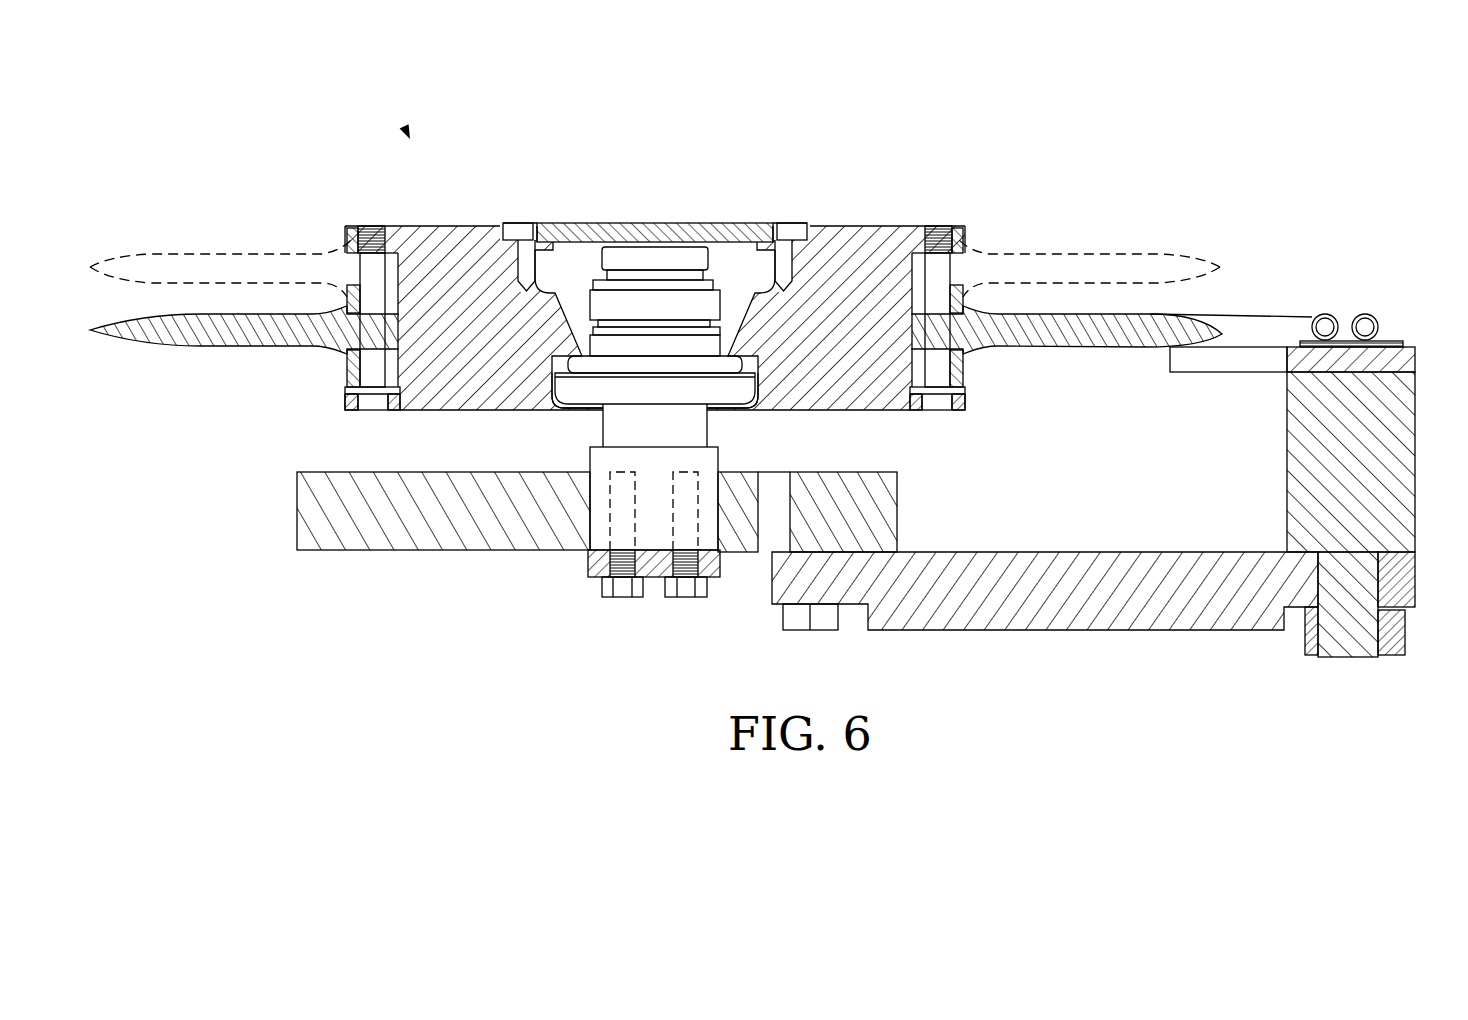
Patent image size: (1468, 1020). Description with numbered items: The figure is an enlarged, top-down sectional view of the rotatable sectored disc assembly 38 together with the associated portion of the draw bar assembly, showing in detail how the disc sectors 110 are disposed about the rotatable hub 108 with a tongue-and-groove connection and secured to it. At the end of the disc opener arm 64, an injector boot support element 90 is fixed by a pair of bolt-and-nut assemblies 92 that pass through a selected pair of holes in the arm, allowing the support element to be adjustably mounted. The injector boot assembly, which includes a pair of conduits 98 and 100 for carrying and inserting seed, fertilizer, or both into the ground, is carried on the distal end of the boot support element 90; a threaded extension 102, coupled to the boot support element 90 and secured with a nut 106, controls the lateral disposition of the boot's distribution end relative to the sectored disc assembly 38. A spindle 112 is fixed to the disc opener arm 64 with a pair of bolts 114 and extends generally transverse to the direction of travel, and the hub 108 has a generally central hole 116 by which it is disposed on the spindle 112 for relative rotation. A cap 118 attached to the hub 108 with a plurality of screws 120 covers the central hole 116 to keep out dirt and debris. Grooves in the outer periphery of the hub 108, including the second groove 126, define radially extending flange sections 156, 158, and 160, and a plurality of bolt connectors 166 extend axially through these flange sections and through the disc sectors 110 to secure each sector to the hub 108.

The sectored disc assembly 38 is at (408, 135).
The disc opener arm 64 is at (380, 515).
The injector boot support element 90 is at (1130, 600).
The bolt-and-nut assemblies 92 is at (800, 622).
The conduit 98 is at (1316, 316).
The conduit 100 is at (1373, 316).
The threaded extension 102 is at (1290, 466).
The nut 106 is at (1312, 640).
The rotatable hub 108 is at (867, 272).
The disc sectors 110 is at (225, 332).
The spindle 112 is at (733, 387).
The bolts 114 is at (677, 590).
The central hole 116 is at (560, 395).
The cap 118 is at (652, 224).
The screws 120 is at (522, 224).
The second groove 126 is at (340, 269).
The flange section 156 is at (348, 368).
The flange section 158 is at (348, 301).
The flange section 160 is at (348, 237).
The bolt connectors 166 is at (375, 404).